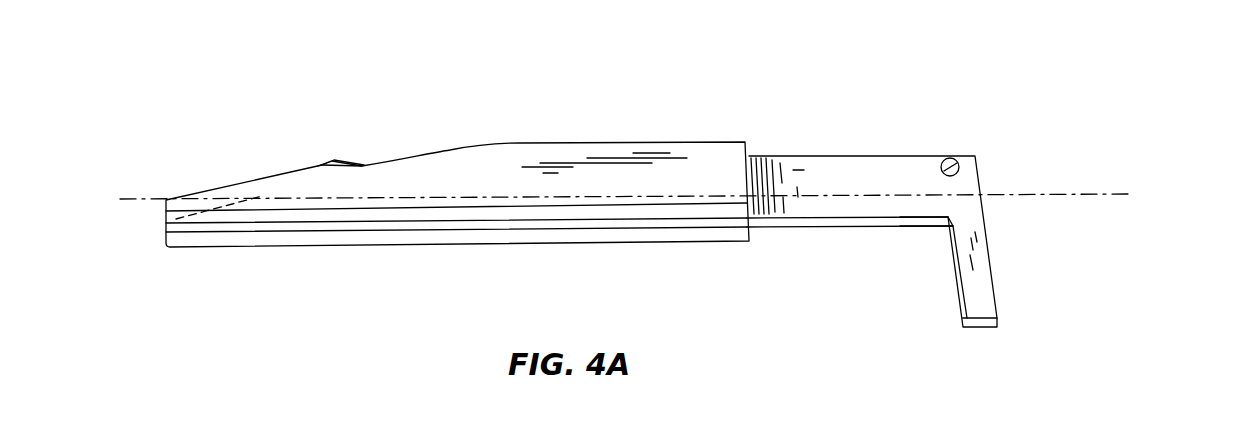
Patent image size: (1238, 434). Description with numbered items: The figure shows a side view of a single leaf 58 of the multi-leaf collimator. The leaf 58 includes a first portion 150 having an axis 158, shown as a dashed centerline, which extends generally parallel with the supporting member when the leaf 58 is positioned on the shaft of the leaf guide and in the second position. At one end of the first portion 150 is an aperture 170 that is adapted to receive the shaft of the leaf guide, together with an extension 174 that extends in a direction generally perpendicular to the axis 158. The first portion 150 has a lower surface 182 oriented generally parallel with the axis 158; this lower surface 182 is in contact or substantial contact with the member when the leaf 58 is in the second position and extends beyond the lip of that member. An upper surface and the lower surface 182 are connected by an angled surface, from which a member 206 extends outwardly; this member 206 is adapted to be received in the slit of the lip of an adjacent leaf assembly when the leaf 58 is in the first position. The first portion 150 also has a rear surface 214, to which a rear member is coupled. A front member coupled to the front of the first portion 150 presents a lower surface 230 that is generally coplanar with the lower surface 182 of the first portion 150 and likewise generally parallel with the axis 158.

The leaf 58 is at (652, 82).
The first portion 150 is at (817, 162).
The axis 158 is at (1123, 192).
The aperture 170 is at (956, 158).
The extension 174 is at (987, 307).
The lower surface 182 is at (815, 222).
The member 206 is at (327, 163).
The rear surface 214 is at (908, 224).
The lower surface 230 is at (478, 212).